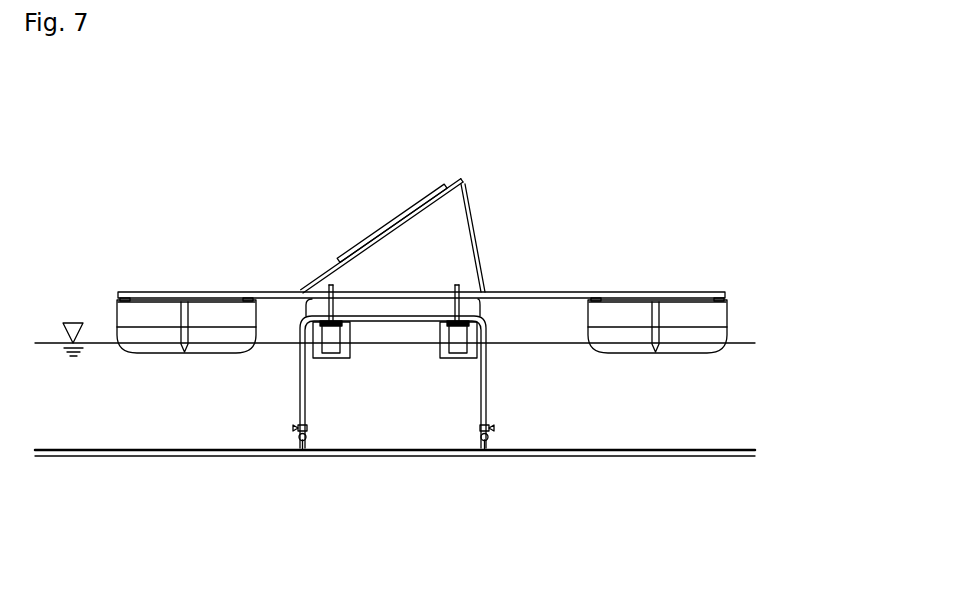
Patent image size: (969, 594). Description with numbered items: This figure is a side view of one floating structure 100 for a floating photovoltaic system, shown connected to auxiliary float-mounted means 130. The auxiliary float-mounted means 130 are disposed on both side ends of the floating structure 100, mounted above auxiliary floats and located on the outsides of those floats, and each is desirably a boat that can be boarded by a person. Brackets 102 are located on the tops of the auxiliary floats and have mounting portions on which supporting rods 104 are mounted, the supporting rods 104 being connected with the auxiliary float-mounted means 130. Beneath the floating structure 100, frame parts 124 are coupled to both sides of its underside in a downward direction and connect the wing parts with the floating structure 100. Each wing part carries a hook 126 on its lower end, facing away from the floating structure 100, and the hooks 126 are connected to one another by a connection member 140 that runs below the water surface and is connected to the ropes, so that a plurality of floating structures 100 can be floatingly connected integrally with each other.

The floating structure 100 is at (496, 152).
The bracket 102 is at (341, 284).
The supporting rod 104 is at (283, 292).
The frame part 124 is at (489, 378).
The hook 126 is at (488, 438).
The auxiliary float-mounted means 130 is at (114, 300).
The connection member 140 is at (162, 456).